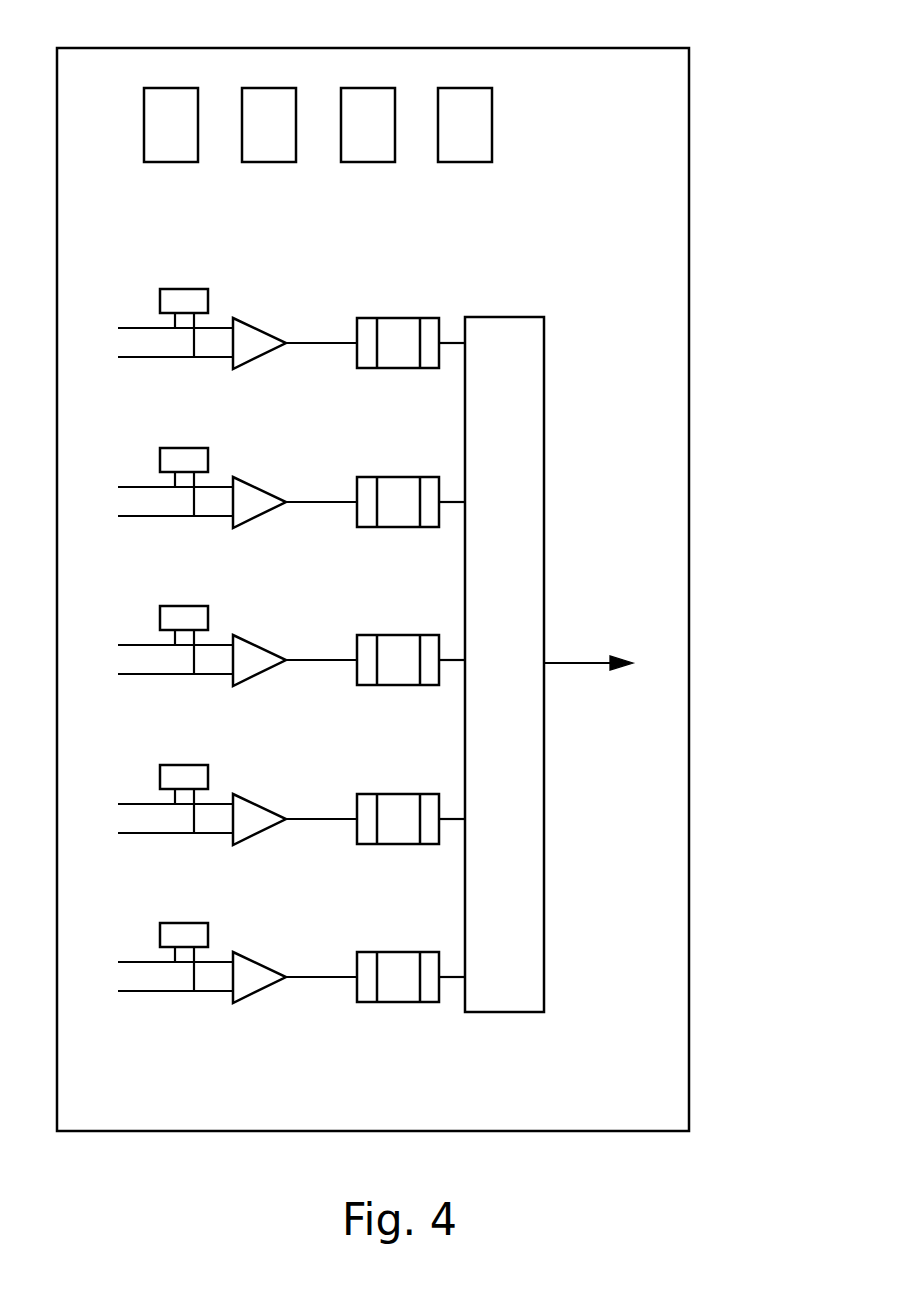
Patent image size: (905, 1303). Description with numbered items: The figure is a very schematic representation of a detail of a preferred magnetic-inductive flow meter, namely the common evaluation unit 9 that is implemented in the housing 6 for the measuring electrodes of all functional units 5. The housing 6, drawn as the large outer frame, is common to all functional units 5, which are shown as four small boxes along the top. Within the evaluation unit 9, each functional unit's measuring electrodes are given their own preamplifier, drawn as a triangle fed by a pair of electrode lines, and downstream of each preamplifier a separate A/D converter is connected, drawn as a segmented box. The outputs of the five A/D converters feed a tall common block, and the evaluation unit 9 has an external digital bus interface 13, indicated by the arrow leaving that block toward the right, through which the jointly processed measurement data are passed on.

The functional unit 5 is at (163, 133).
The housing 6 is at (690, 115).
The evaluation unit 9 is at (312, 282).
The external digital bus interface 13 is at (545, 483).